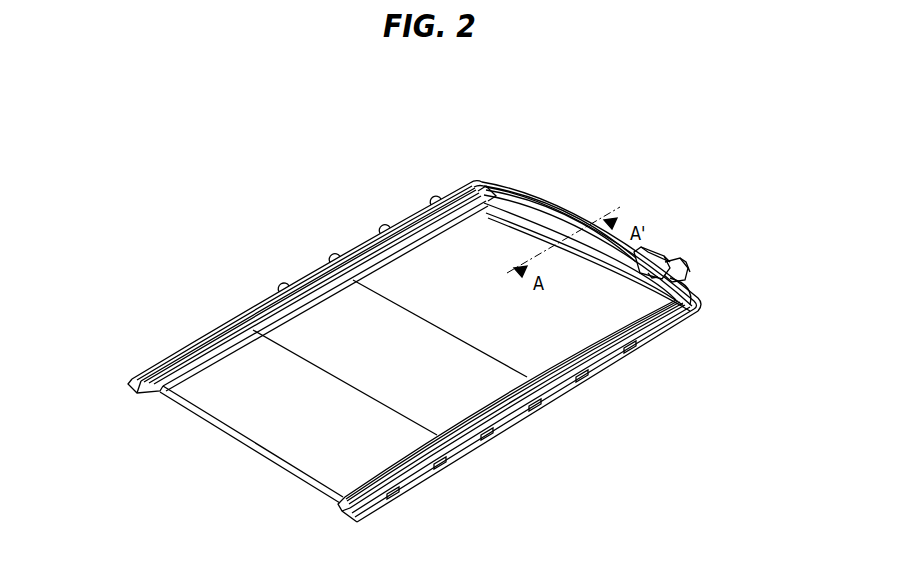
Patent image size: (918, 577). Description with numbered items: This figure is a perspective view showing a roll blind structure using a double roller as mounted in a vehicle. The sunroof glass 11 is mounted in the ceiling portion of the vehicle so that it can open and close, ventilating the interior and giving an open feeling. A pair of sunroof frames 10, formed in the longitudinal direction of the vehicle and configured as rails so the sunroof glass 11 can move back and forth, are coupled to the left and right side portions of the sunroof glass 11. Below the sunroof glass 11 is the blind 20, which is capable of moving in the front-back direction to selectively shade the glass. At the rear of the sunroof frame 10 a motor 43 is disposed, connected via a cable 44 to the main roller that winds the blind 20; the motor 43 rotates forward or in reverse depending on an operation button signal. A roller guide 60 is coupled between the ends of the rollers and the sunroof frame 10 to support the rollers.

The sunroof frame 10 is at (322, 268).
The sunroof glass 11 is at (577, 322).
The blind 20 is at (497, 228).
The motor 43 is at (651, 258).
The cable 44 is at (563, 206).
The roller guide 60 is at (478, 191).